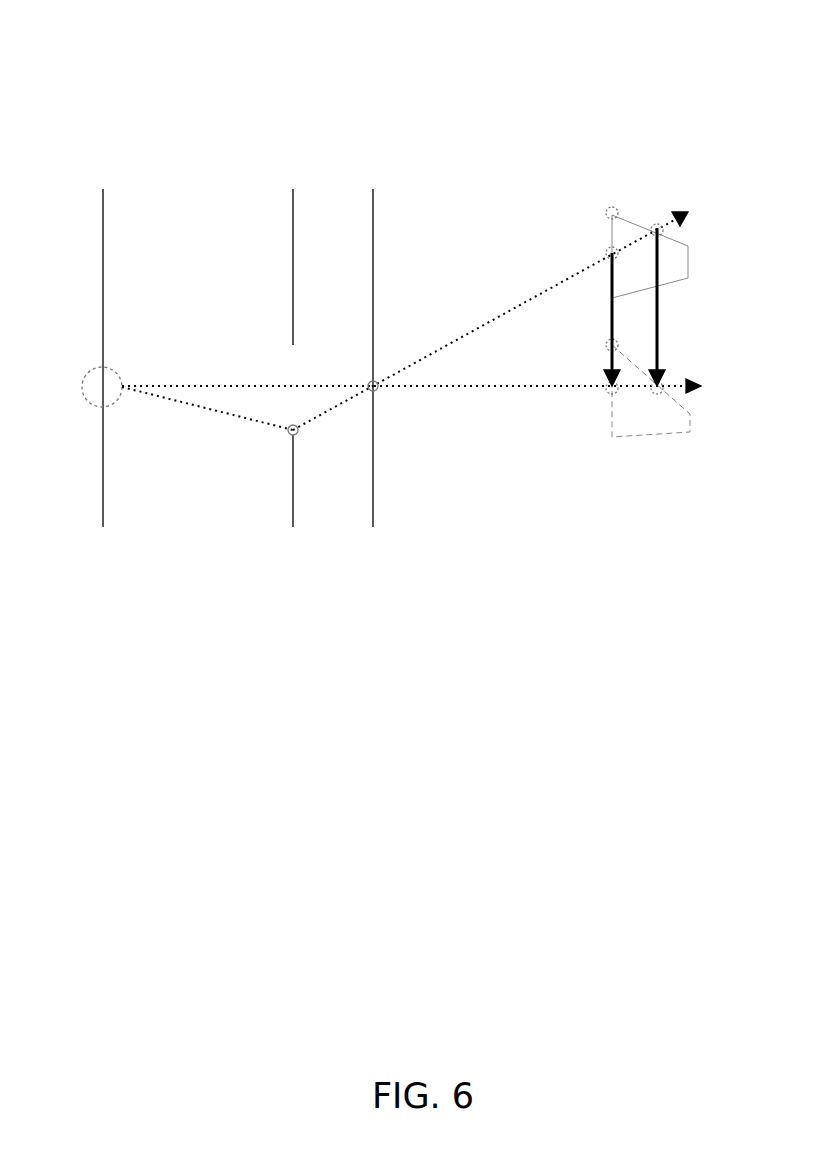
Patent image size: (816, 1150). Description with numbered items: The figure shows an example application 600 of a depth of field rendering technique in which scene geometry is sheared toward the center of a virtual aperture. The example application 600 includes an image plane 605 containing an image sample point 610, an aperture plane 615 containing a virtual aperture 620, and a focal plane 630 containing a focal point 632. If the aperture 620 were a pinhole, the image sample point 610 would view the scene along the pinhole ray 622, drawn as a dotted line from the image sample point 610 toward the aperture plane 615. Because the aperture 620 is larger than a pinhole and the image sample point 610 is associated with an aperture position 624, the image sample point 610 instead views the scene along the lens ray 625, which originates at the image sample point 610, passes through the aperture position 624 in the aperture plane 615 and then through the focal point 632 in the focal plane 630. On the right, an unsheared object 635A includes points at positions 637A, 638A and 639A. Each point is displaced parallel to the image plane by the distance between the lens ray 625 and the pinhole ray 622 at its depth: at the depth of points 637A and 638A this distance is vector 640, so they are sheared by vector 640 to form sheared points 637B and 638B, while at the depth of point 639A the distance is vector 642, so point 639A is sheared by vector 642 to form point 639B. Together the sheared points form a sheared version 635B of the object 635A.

The example application 600 is at (138, 14).
The image plane 605 is at (86, 207).
The image sample point 610 is at (95, 365).
The aperture plane 615 is at (283, 527).
The virtual aperture 620 is at (288, 355).
The pinhole ray 622 is at (257, 385).
The aperture position 624 is at (288, 435).
The lens ray 625 is at (328, 418).
The focal plane 630 is at (387, 528).
The focal point 632 is at (378, 392).
The unsheared object 635A is at (632, 220).
The sheared version of object 635B is at (665, 440).
The point position 637A is at (606, 213).
The sheared point 637B is at (607, 342).
The point position 638A is at (605, 250).
The sheared point 638B is at (607, 397).
The point position 639A is at (657, 219).
The sheared point 639B is at (661, 385).
The vector 640 is at (609, 307).
The vector 642 is at (659, 327).